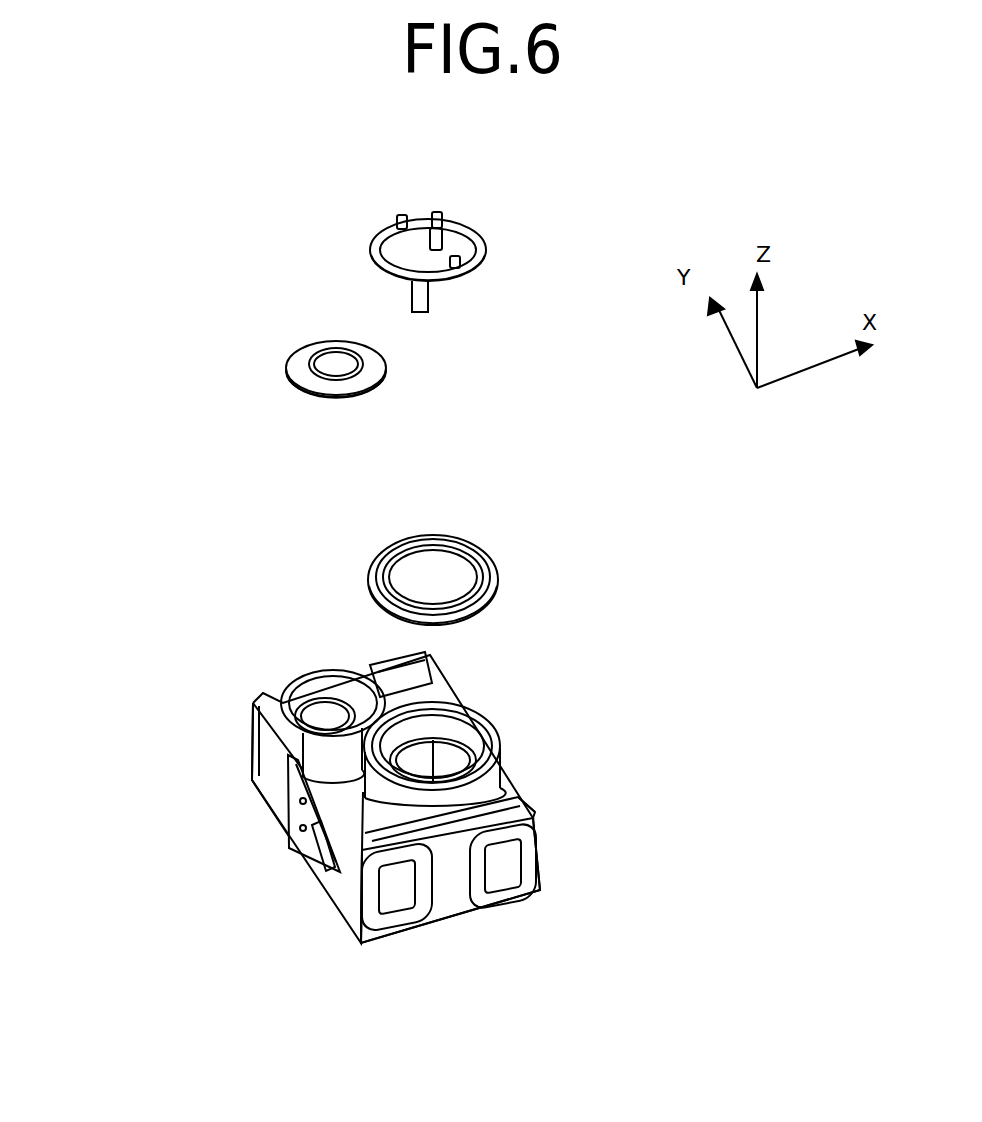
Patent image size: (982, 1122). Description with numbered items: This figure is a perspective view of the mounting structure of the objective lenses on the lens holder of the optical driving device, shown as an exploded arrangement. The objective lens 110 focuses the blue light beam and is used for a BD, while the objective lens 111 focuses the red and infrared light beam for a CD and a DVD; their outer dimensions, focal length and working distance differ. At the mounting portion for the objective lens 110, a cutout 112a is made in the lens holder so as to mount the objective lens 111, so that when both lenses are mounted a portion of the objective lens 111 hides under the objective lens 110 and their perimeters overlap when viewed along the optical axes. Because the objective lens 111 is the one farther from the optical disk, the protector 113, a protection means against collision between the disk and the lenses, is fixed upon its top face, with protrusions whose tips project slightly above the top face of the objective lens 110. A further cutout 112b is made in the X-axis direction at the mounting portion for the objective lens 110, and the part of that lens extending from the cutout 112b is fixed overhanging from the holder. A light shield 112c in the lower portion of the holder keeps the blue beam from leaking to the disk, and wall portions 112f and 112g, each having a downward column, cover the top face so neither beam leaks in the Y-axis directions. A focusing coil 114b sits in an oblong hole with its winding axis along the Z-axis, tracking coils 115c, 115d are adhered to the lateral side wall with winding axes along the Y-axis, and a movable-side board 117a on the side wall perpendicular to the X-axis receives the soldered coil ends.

The objective lens 110 is at (287, 365).
The objective lens 111 is at (433, 534).
The cutout 112a is at (462, 703).
The cutout 112b is at (275, 723).
The light shield 112c is at (290, 843).
The wall portion 112f is at (365, 668).
The wall portion 112g is at (518, 800).
The protector 113 is at (485, 250).
The focusing coil 114b is at (440, 875).
The tracking coil 115c is at (375, 893).
The tracking coil 115d is at (523, 845).
The movable-side board 117a is at (290, 805).